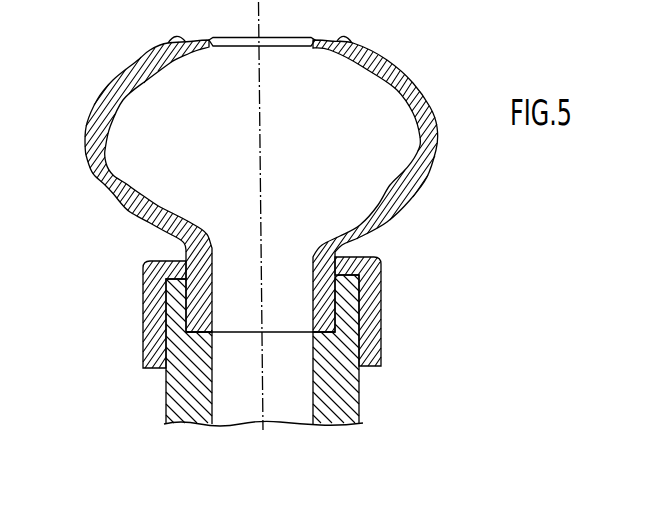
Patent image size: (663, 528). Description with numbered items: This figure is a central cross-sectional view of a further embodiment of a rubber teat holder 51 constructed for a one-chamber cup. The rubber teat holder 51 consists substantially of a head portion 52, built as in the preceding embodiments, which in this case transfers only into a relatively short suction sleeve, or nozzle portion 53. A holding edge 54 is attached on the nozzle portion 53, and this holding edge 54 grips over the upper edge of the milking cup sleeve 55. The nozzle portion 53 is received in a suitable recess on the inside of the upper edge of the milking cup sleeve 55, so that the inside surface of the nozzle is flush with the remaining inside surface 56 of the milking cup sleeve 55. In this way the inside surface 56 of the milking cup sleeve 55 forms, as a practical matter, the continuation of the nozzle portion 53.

The rubber teat holder 51 is at (432, 89).
The head portion 52 is at (422, 143).
The nozzle portion 53 is at (199, 293).
The holding edge 54 is at (367, 322).
The milking cup sleeve 55 is at (335, 397).
The inside surface of the milking cup sleeve 56 is at (213, 386).